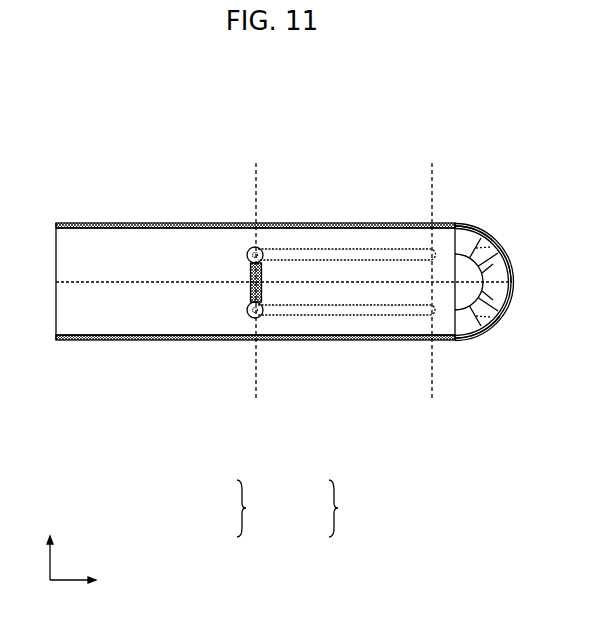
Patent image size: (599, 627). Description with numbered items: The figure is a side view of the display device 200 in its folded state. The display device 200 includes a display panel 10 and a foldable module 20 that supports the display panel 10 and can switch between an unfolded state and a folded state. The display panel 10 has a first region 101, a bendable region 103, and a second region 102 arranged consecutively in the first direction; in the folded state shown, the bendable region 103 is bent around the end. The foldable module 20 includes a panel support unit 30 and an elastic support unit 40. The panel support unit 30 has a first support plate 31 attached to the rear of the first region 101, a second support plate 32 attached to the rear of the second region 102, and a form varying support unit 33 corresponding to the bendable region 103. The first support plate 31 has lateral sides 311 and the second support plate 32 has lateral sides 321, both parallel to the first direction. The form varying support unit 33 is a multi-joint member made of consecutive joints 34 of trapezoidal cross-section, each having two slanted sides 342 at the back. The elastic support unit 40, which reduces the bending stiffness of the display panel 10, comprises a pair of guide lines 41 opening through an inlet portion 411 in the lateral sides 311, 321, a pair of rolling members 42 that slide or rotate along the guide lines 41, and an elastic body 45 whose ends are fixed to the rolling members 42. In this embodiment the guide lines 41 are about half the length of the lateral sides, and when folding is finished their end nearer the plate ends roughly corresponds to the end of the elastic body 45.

The display device 200 is at (271, 95).
The foldable module 20 is at (55, 296).
The display panel 10 is at (213, 223).
The panel support unit 30 is at (245, 508).
The first support plate 31 is at (55, 246).
The second support plate 32 is at (55, 325).
The form varying support unit 33 is at (507, 304).
The joints 34 is at (505, 270).
The elastic support unit 40 is at (336, 508).
The guide lines 41 is at (347, 282).
The inlet portion 411 is at (366, 246).
The rolling members 42 is at (262, 246).
The elastic body 45 is at (247, 313).
The first region 101 is at (158, 237).
The second region 102 is at (100, 341).
The bendable region 103 is at (497, 238).
The sides of first support plate 311 is at (113, 242).
The sides of second support plate 321 is at (153, 322).
The slanted sides 342 is at (468, 335).